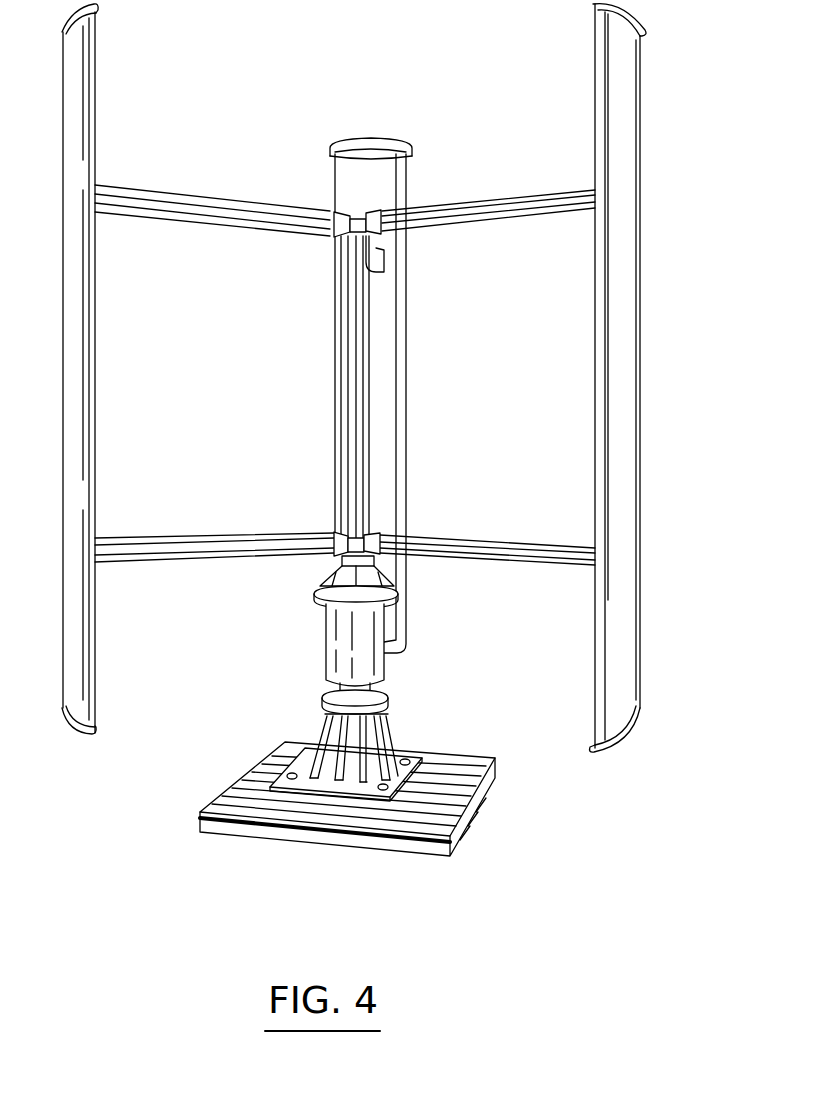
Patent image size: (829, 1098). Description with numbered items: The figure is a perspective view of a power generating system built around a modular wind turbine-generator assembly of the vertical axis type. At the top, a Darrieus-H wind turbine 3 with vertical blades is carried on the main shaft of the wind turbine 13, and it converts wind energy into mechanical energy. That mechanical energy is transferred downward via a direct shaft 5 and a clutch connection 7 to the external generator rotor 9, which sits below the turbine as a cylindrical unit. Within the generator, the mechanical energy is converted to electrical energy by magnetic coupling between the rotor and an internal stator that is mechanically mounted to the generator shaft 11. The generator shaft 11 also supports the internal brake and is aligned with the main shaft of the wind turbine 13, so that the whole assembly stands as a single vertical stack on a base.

The wind turbine 3 is at (620, 185).
The main shaft of the wind turbine 13 is at (330, 357).
The direct shaft 5 is at (322, 565).
The clutch connection 7 is at (301, 645).
The external generator rotor 9 is at (320, 652).
The generator shaft 11 is at (314, 693).